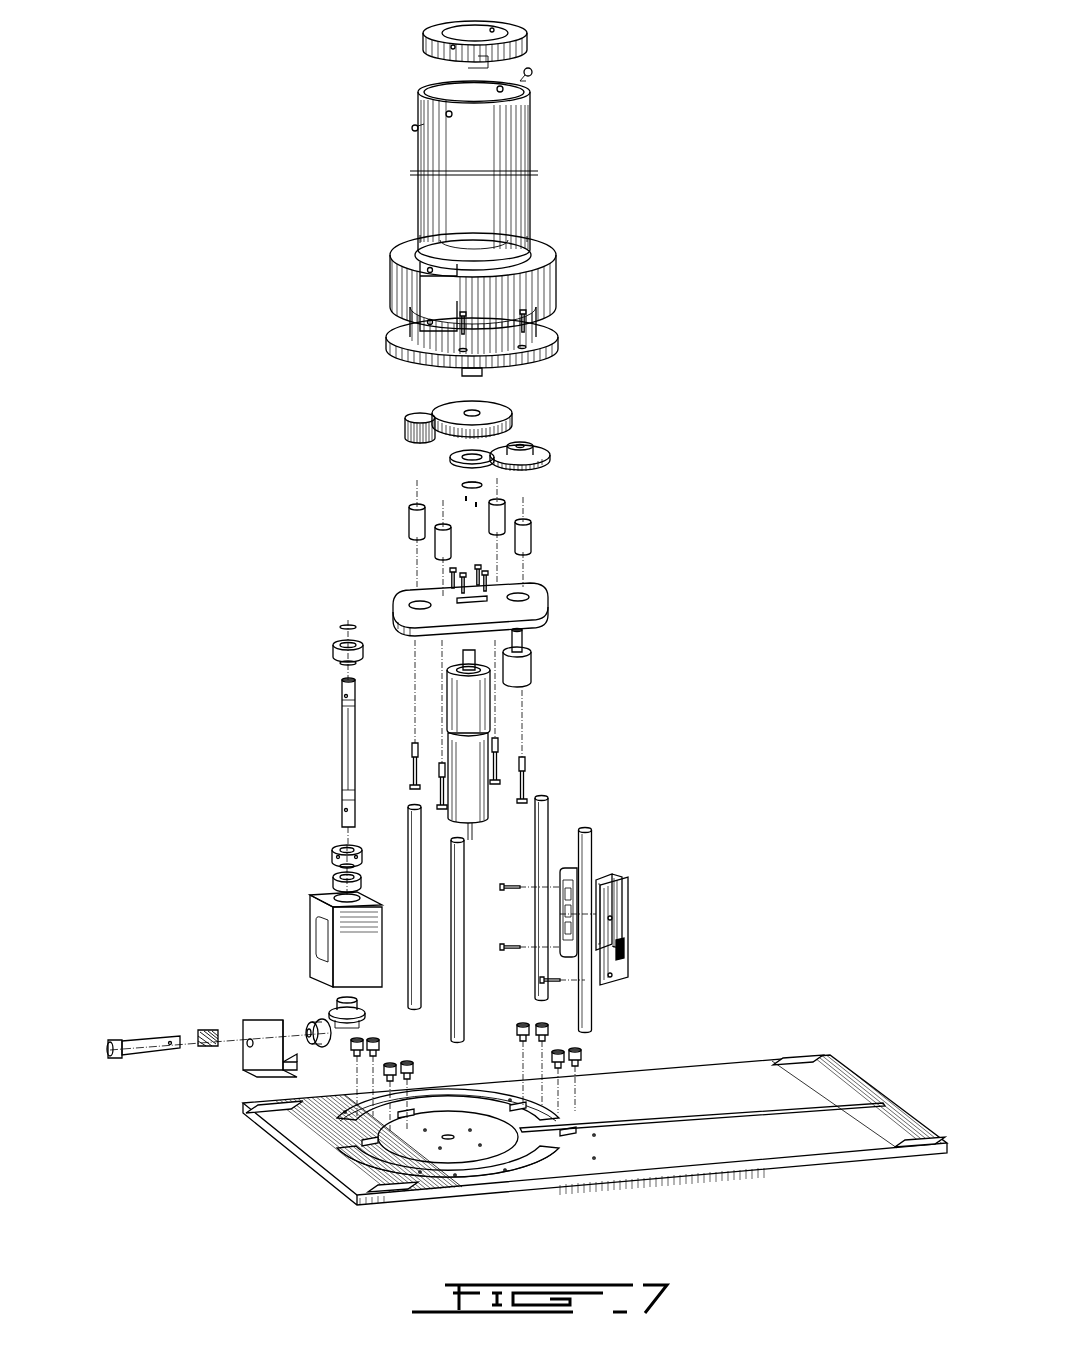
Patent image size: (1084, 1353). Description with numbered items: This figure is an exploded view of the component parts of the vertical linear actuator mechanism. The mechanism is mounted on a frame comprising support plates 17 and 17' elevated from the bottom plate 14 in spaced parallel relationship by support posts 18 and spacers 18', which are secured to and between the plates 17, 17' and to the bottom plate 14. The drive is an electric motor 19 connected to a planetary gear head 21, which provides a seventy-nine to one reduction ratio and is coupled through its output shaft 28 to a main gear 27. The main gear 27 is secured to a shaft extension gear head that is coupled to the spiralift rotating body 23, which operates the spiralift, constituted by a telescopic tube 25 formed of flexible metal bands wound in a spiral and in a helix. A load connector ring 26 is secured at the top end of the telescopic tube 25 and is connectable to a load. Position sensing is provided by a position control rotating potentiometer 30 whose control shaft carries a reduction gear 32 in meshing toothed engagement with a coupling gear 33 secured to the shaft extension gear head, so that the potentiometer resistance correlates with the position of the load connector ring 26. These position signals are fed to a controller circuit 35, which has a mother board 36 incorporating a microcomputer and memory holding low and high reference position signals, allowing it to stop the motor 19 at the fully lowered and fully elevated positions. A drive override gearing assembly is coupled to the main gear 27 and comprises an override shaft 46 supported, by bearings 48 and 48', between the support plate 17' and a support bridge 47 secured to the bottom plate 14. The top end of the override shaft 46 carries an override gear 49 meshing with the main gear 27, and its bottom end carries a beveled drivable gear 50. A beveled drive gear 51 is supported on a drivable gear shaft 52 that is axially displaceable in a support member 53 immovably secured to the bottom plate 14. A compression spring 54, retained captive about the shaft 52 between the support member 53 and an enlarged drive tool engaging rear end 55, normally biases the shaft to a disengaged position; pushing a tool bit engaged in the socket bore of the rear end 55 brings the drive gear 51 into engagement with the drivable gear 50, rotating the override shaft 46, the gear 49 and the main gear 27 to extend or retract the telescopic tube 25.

The bottom plate 14 is at (767, 1067).
The support plate 17 is at (521, 343).
The support plate 17' is at (521, 600).
The support posts 18 is at (550, 919).
The spacers 18' is at (524, 537).
The electric motor 19 is at (478, 777).
The planetary gear head 21 is at (478, 702).
The spiralift rotating body 23 is at (568, 280).
The telescopic tube 25 is at (528, 133).
The load connector ring 26 is at (528, 46).
The main gear 27 is at (512, 410).
The output shaft 28 is at (445, 655).
The position control rotating potentiometer 30 is at (531, 668).
The reduction gear 32 is at (550, 452).
The coupling gear 33 is at (466, 461).
The controller circuit 35 is at (630, 913).
The mother board 36 is at (598, 978).
The override shaft 46 is at (343, 740).
The support bridge 47 is at (325, 930).
The bearing 48 is at (301, 650).
The bearing 48' is at (297, 864).
The override gear 49 is at (405, 422).
The beveled drivable gear 50 is at (343, 1005).
The beveled drive gear 51 is at (317, 1042).
The drivable gear shaft 52 is at (150, 1045).
The support member 53 is at (248, 1052).
The compression spring 54 is at (207, 1030).
The drive tool engaging rear end 55 is at (114, 1058).